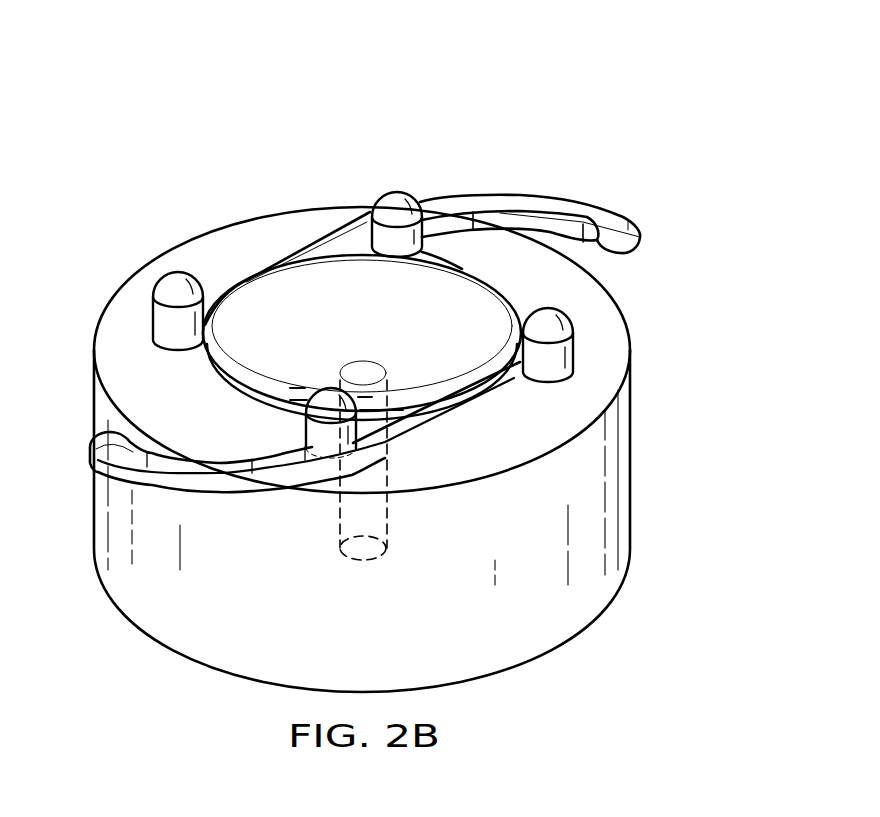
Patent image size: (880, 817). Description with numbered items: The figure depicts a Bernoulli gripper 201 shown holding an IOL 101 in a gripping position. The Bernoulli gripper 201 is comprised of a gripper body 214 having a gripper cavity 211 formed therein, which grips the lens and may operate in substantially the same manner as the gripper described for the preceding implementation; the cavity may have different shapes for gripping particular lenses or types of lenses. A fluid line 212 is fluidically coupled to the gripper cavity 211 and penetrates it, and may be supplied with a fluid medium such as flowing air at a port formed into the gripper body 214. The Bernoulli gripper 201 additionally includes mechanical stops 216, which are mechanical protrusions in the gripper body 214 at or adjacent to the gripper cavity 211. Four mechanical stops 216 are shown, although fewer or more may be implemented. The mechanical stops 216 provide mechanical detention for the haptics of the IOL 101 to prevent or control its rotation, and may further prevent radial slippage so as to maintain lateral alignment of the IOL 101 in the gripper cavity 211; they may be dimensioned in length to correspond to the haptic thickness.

The Bernoulli gripper 201 is at (193, 186).
The IOL 101 is at (622, 312).
The gripper cavity 211 is at (327, 293).
The fluid line 212 is at (340, 540).
The gripper body 214 is at (632, 452).
The mechanical stops 216 is at (173, 274).